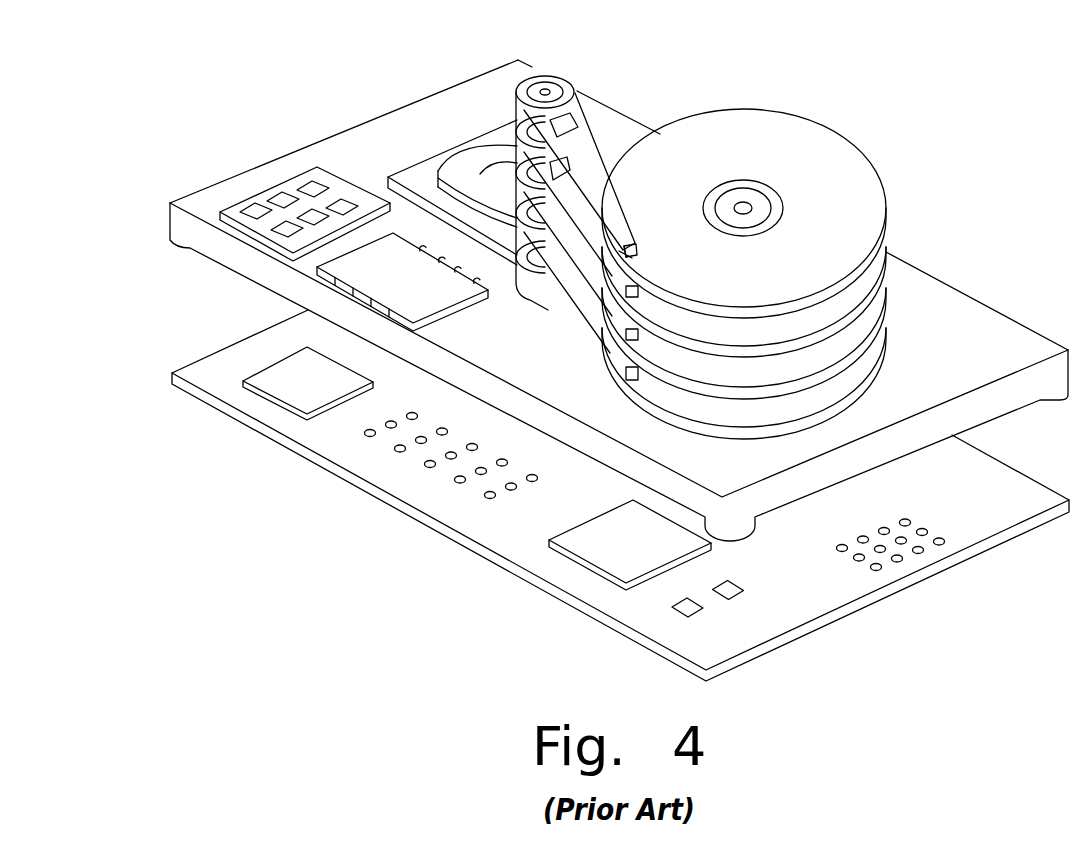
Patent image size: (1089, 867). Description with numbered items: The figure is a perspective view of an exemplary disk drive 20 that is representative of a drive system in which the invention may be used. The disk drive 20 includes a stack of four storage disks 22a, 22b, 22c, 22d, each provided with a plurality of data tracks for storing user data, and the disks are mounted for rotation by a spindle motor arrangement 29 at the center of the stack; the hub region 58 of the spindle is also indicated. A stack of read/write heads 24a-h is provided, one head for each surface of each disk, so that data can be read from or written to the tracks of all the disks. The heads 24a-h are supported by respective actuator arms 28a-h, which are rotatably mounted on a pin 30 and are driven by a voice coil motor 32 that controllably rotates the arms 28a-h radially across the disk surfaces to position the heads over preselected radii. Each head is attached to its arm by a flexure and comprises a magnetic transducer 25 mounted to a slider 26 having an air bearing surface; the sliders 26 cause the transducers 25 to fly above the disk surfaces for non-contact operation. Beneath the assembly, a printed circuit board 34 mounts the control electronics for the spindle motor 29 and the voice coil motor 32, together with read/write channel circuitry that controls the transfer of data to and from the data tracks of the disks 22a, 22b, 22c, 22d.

The disk drive 20 is at (305, 122).
The voice coil motor 32 is at (446, 157).
The pin 30 is at (547, 88).
The actuator arms 28a-h is at (582, 130).
The read/write heads 24a-h is at (638, 244).
The slider 26 is at (640, 248).
The magnetic transducer 25 is at (634, 255).
The spindle motor arrangement 29 is at (750, 198).
The hub 58 is at (784, 208).
The storage disk 22a is at (889, 198).
The storage disk 22b is at (888, 250).
The storage disk 22c is at (888, 293).
The storage disk 22d is at (888, 332).
The printed circuit board 34 is at (847, 583).